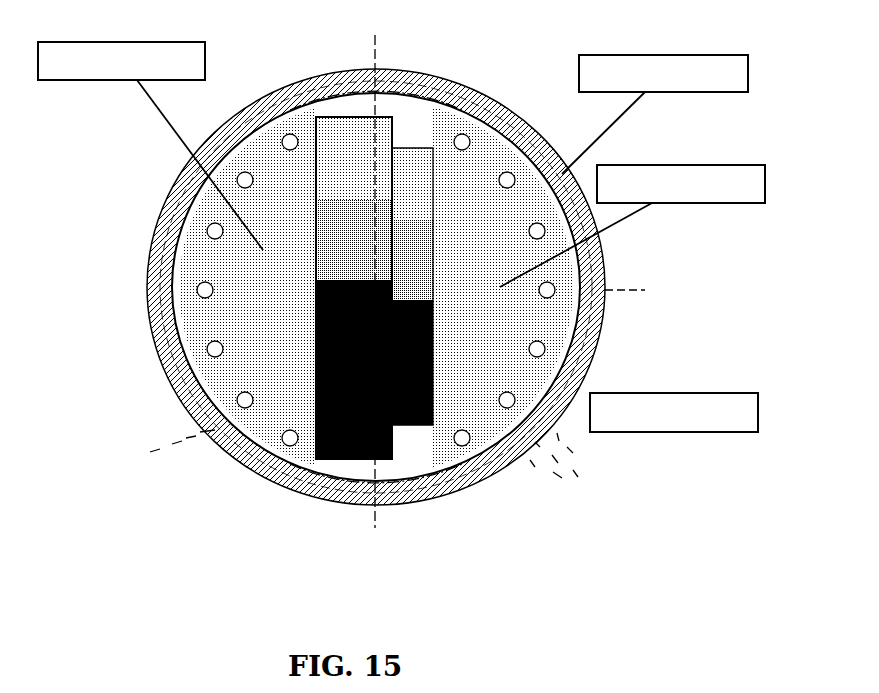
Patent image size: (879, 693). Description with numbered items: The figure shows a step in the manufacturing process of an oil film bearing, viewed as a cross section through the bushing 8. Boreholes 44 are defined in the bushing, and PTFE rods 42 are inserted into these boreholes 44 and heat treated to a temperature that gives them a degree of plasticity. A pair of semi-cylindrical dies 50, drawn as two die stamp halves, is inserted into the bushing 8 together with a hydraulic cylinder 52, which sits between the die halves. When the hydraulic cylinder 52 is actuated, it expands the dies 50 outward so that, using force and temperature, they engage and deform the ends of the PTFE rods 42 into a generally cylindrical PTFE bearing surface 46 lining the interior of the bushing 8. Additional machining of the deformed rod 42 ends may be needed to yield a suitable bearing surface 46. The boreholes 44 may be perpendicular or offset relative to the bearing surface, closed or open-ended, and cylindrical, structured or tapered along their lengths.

The bushing 8 is at (475, 473).
The PTFE rods 42 is at (573, 323).
The boreholes 44 is at (388, 396).
The bearing surface 46 is at (592, 262).
The semi-cylindrical dies 50 is at (401, 254).
The hydraulic cylinder 52 is at (383, 330).